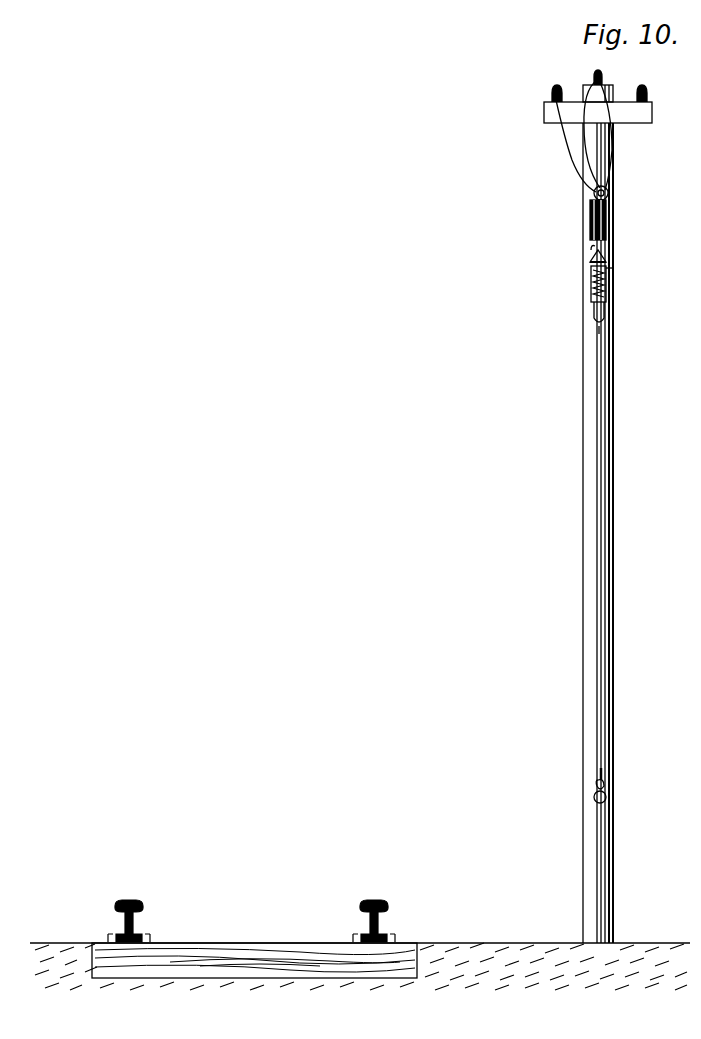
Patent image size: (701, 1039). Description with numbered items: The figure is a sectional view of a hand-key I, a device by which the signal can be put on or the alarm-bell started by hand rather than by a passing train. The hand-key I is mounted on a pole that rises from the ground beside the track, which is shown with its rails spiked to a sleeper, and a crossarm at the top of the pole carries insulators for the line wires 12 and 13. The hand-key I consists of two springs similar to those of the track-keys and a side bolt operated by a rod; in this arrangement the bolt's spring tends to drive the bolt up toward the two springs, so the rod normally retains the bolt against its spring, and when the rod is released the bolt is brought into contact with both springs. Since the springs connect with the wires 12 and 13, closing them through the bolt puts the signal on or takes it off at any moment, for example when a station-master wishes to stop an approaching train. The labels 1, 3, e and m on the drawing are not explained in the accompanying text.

The pole 1 is at (598, 440).
The sleeper 3 is at (358, 955).
The wire 12 is at (601, 129).
The wire 13 is at (574, 138).
The catch e is at (590, 246).
The spring m is at (591, 300).
The hand-key I is at (614, 284).